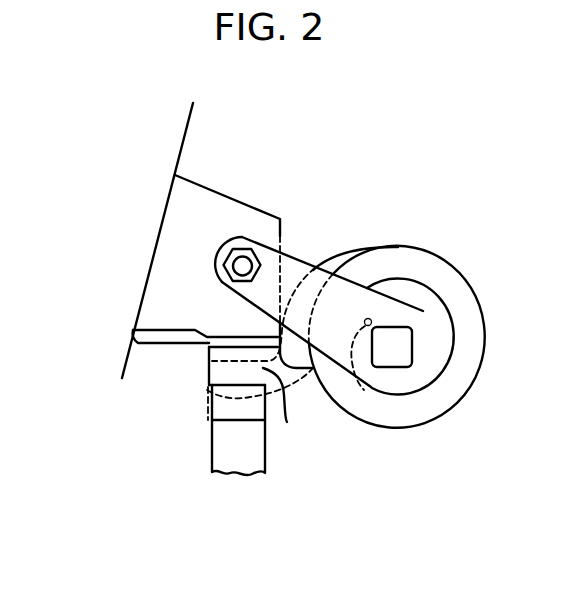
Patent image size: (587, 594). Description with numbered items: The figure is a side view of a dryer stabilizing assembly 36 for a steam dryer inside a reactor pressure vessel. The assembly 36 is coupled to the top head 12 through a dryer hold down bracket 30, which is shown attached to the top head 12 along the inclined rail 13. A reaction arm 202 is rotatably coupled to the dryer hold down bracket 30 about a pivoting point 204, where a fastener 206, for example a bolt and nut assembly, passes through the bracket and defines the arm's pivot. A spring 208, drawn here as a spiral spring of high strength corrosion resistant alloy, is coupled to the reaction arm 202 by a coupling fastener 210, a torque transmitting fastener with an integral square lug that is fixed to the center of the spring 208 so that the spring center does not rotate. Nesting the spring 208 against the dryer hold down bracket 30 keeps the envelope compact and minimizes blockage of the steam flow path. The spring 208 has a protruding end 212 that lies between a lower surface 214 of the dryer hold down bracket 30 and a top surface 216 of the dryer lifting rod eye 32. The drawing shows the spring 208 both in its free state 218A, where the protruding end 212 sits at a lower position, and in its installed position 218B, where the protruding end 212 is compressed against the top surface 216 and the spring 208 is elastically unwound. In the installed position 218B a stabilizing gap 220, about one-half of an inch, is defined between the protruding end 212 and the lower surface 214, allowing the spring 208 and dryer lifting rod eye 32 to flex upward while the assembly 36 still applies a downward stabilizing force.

The top head 12 is at (183, 133).
The frame rail 13 is at (190, 120).
The dryer hold down bracket 30 is at (220, 207).
The dryer stabilizing assembly 36 is at (326, 233).
The spring 208 is at (371, 249).
The pivoting point 204 is at (240, 264).
The fastener 206 is at (220, 275).
The reaction arm 202 is at (390, 294).
The coupling fastener 210 is at (411, 327).
The lower surface 214 is at (228, 338).
The stabilizing gap 220 is at (134, 331).
The installed position 218B is at (210, 359).
The free state 218A is at (212, 365).
The protruding end 212 is at (287, 422).
The top surface 216 is at (233, 388).
The dryer lifting rod eye 32 is at (268, 450).